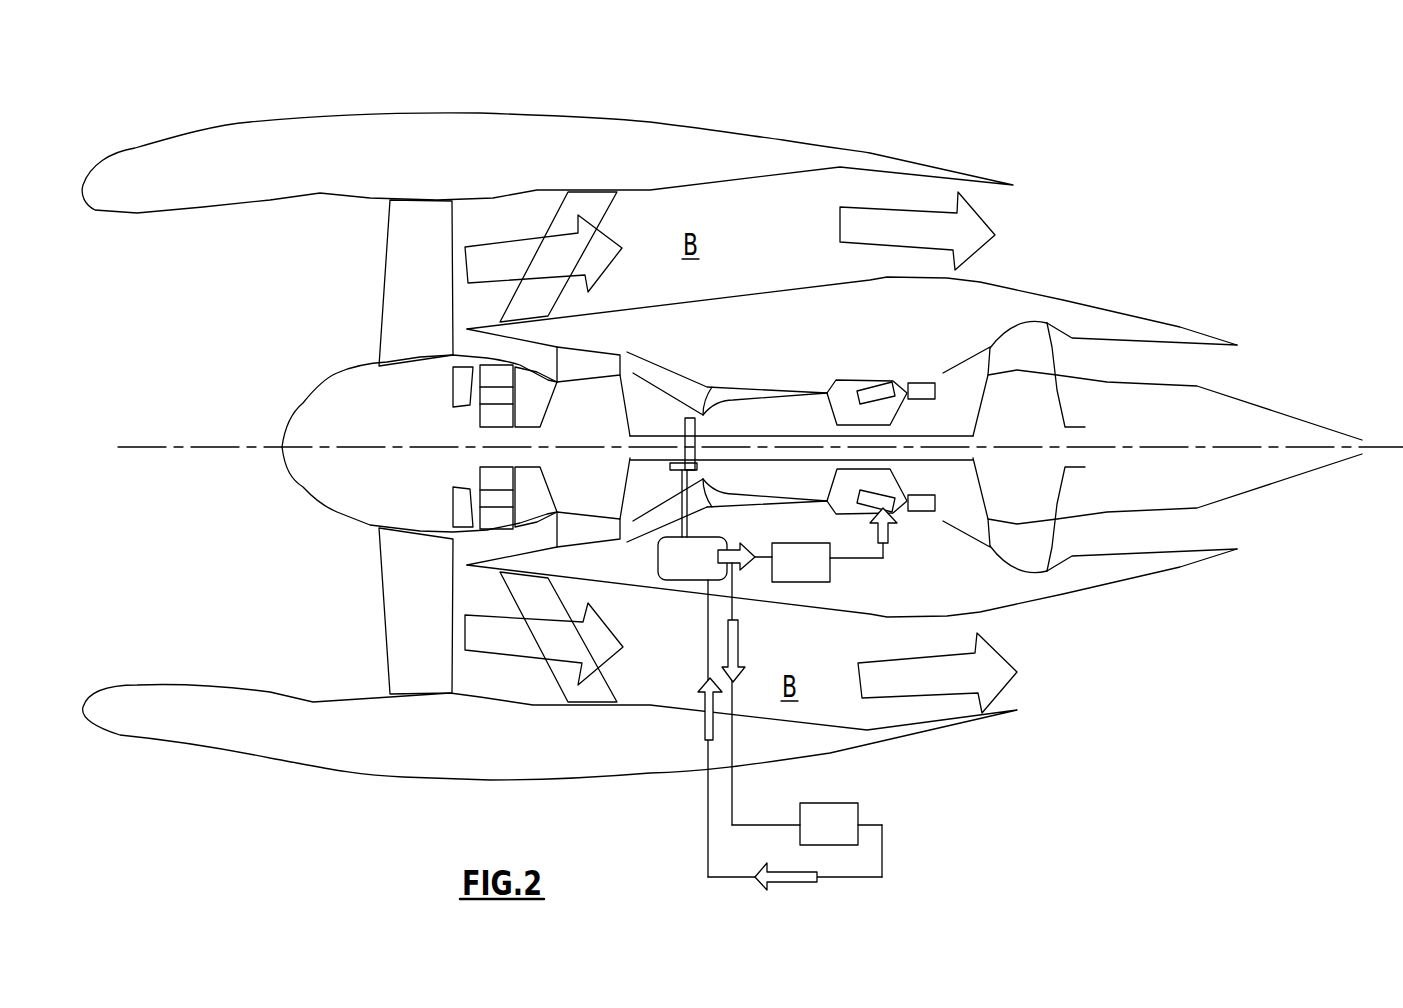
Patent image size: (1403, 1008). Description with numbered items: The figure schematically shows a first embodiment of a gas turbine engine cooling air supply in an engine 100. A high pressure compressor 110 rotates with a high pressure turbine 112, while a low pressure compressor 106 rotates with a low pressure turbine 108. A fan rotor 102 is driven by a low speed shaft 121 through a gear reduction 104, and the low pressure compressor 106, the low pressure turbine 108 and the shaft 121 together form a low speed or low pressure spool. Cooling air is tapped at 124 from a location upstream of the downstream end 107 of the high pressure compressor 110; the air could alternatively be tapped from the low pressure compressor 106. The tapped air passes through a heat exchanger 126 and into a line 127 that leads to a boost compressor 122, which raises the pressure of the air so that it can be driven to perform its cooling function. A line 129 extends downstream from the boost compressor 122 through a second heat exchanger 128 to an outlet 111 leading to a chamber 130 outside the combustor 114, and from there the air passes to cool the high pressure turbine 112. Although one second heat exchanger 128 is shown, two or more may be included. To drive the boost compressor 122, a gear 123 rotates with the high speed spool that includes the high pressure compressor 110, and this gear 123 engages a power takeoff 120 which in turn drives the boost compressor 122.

The engine 100 is at (549, 397).
The fan rotor 102 is at (393, 327).
The gear reduction 104 is at (500, 500).
The low pressure compressor 106 is at (588, 365).
The downstream end 107 is at (836, 358).
The low pressure turbine 108 is at (1015, 348).
The high pressure compressor 110 is at (733, 398).
The outlet 111 is at (892, 520).
The high pressure turbine 112 is at (922, 392).
The combustor 114 is at (872, 392).
The power takeoff 120 is at (630, 478).
The low speed shaft 121 is at (648, 440).
The boost compressor 122 is at (688, 563).
The gear 123 is at (687, 430).
The cooling air tap 124 is at (727, 502).
The heat exchanger 126 is at (843, 808).
The line 127 is at (707, 825).
The second heat exchanger 128 is at (803, 576).
The line 129 is at (761, 566).
The chamber 130 is at (902, 510).